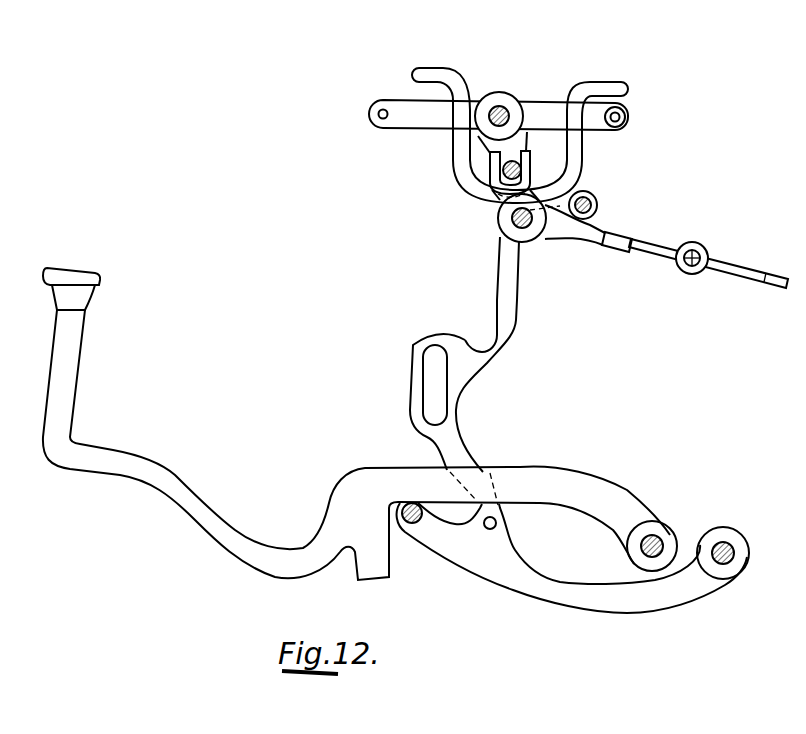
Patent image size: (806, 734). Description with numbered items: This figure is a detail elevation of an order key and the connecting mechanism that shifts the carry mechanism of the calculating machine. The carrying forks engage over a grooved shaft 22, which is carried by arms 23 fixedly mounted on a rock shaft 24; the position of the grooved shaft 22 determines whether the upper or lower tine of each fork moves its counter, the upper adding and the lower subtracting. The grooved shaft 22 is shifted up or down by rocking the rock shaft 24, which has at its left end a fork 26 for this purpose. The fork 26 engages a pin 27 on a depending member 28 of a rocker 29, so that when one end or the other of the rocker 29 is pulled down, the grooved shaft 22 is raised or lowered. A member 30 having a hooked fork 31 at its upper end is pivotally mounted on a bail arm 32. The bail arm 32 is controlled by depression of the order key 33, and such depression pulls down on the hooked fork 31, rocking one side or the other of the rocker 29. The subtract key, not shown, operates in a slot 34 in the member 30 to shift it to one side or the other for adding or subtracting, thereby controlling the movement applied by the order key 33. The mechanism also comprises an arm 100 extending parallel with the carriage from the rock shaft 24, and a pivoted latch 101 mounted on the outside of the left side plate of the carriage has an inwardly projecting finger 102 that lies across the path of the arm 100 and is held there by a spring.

The grooved shaft 22 is at (598, 204).
The arms 23 is at (553, 210).
The rock shaft 24 is at (517, 213).
The fork 26 is at (507, 192).
The pin 27 is at (528, 166).
The depending member 28 is at (515, 147).
The rocker 29 is at (398, 108).
The member 30 is at (468, 358).
The hooked fork 31 is at (453, 87).
The bail arm 32 is at (473, 550).
The order key 33 is at (280, 562).
The slot 34 is at (418, 375).
The arm 100 is at (580, 234).
The pivoted latch 101 is at (653, 245).
The finger 102 is at (633, 250).